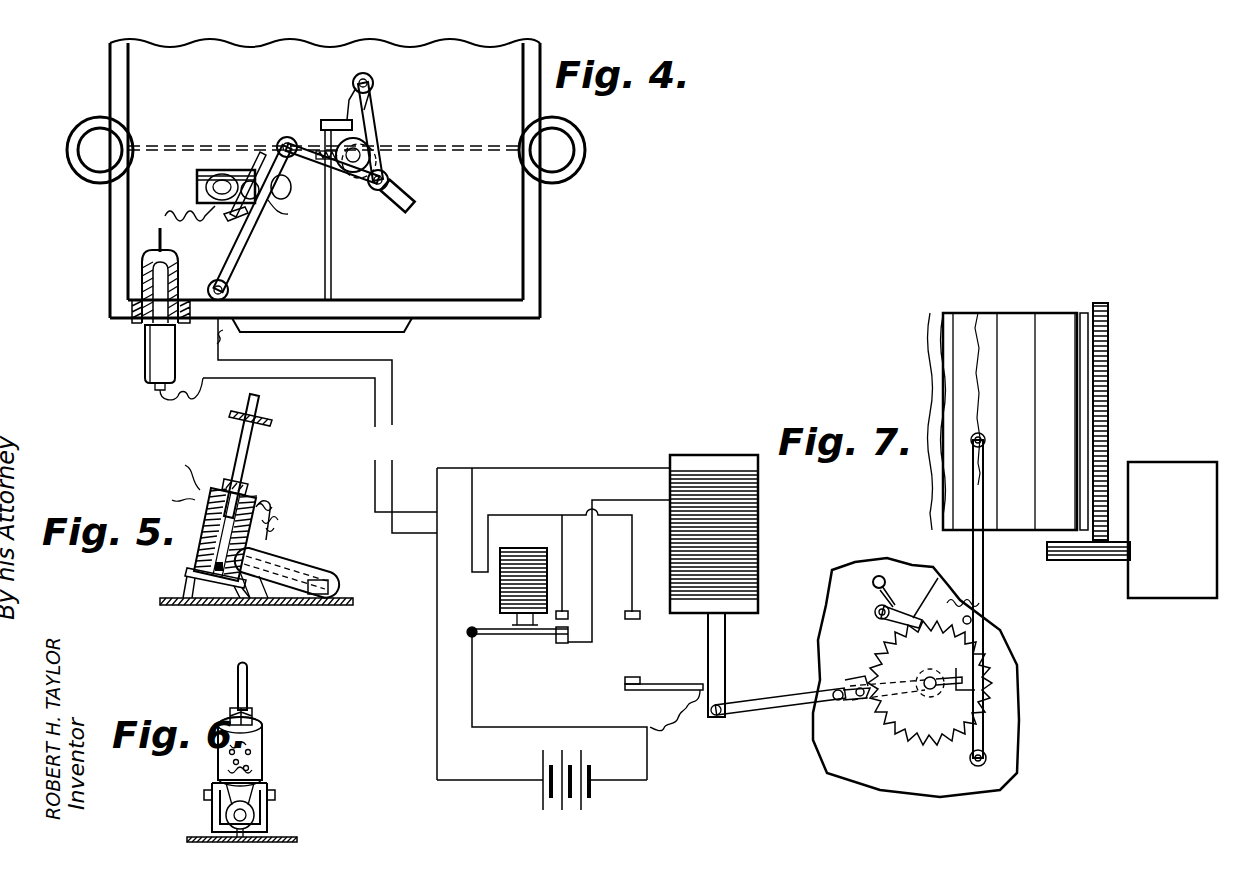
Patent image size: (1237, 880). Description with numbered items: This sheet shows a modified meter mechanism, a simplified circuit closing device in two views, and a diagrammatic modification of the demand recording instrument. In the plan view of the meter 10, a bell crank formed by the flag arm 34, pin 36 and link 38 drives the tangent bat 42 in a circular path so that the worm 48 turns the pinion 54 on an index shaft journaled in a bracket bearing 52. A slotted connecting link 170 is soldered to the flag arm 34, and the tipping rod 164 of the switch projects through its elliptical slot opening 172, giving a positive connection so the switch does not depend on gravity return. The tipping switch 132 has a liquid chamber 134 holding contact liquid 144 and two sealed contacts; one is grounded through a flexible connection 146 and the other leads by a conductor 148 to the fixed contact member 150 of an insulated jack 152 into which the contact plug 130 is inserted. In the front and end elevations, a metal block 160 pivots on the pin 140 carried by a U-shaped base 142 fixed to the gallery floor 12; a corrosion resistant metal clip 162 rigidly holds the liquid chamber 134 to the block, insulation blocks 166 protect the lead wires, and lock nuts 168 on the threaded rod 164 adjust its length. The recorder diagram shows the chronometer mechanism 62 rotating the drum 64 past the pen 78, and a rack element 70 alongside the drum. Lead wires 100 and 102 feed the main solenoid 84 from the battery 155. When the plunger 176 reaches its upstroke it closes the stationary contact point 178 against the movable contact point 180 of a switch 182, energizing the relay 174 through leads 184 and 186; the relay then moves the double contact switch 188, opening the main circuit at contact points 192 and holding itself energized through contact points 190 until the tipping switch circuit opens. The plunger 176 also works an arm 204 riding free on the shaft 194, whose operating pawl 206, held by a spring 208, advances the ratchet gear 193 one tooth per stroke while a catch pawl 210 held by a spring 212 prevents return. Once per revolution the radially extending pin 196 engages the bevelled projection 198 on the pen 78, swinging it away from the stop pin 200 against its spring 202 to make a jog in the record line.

In FIG. 4, the meter 10 is at (540, 238).
In FIG. 5, the horizontal partition 12 is at (200, 606).
In FIG. 6, the horizontal partition 12 is at (297, 838).
In FIG. 4, the flag arm 34 is at (240, 258).
In FIG. 4, the pin 36 is at (372, 80).
In FIG. 4, the link 38 is at (378, 115).
In FIG. 4, the tangent bat 42 is at (390, 185).
In FIG. 4, the worm 48 is at (362, 150).
In FIG. 4, the bracket bearing 52 is at (357, 80).
In FIG. 4, the pinion 54 is at (335, 150).
In FIG. 7, the chronometer mechanism 62 is at (1165, 470).
In FIG. 7, the drum 64 is at (1065, 313).
In FIG. 7, the rack bar 70 is at (1085, 561).
In FIG. 7, the pen 78 is at (983, 560).
In FIG. 7, the main solenoid 84 is at (758, 530).
In FIG. 7, the lead wire 100 is at (373, 490).
In FIG. 7, the lead wire 102 is at (392, 492).
In FIG. 4, the contact plug 130 is at (145, 362).
In FIG. 4, the tipping switch 132 is at (298, 201).
In FIG. 5, the tipping switch 132 is at (304, 549).
In FIG. 6, the tipping switch 132 is at (203, 808).
In FIG. 5, the liquid chamber 134 is at (325, 580).
In FIG. 5, the pivot pin 140 is at (185, 574).
In FIG. 6, the pivot pin 140 is at (275, 795).
In FIG. 5, the U-shaped base 142 is at (185, 585).
In FIG. 6, the U-shaped base 142 is at (268, 810).
In FIG. 5, the contact liquid 144 is at (330, 588).
In FIG. 5, the flexible connection 146 is at (268, 512).
In FIG. 6, the flexible connection 146 is at (250, 750).
In FIG. 4, the conductor 148 is at (163, 214).
In FIG. 5, the conductor 148 is at (272, 526).
In FIG. 6, the conductor 148 is at (226, 772).
In FIG. 4, the fixed contact member 150 is at (158, 235).
In FIG. 4, the insulated jack 152 is at (140, 275).
In FIG. 7, the battery 155 is at (592, 792).
In FIG. 5, the metal block 160 is at (214, 566).
In FIG. 5, the metal clip 162 is at (287, 586).
In FIG. 6, the metal clip 162 is at (212, 826).
In FIG. 4, the tipping rod 164 is at (250, 180).
In FIG. 5, the tipping rod 164 is at (254, 445).
In FIG. 6, the tipping rod 164 is at (247, 676).
In FIG. 5, the insulation blocks 166 is at (205, 522).
In FIG. 6, the insulation blocks 166 is at (262, 752).
In FIG. 5, the lock nuts 168 is at (246, 486).
In FIG. 6, the lock nuts 168 is at (252, 714).
In FIG. 4, the connecting link 170 is at (288, 214).
In FIG. 4, the slot opening 172 is at (224, 220).
In FIG. 7, the relay 174 is at (499, 595).
In FIG. 7, the plunger 176 is at (725, 640).
In FIG. 7, the stationary contact point 178 is at (640, 617).
In FIG. 7, the movable contact point 180 is at (640, 677).
In FIG. 7, the switch 182 is at (632, 676).
In FIG. 7, the lead 184 is at (632, 560).
In FIG. 7, the lead 186 is at (472, 490).
In FIG. 7, the double contact switch 188 is at (560, 640).
In FIG. 7, the contact points 190 is at (568, 616).
In FIG. 7, the contact points 192 is at (568, 635).
In FIG. 7, the ratchet gear 193 is at (915, 742).
In FIG. 7, the shaft 194 is at (925, 694).
In FIG. 7, the radially extending pin 196 is at (955, 685).
In FIG. 7, the bevelled projection 198 is at (958, 668).
In FIG. 7, the stop pin 200 is at (971, 621).
In FIG. 7, the spring 202 is at (979, 603).
In FIG. 7, the arm 204 is at (775, 705).
In FIG. 7, the operating pawl 206 is at (852, 702).
In FIG. 7, the spring 208 is at (848, 680).
In FIG. 7, the catch pawl 210 is at (943, 572).
In FIG. 7, the spring 212 is at (897, 603).